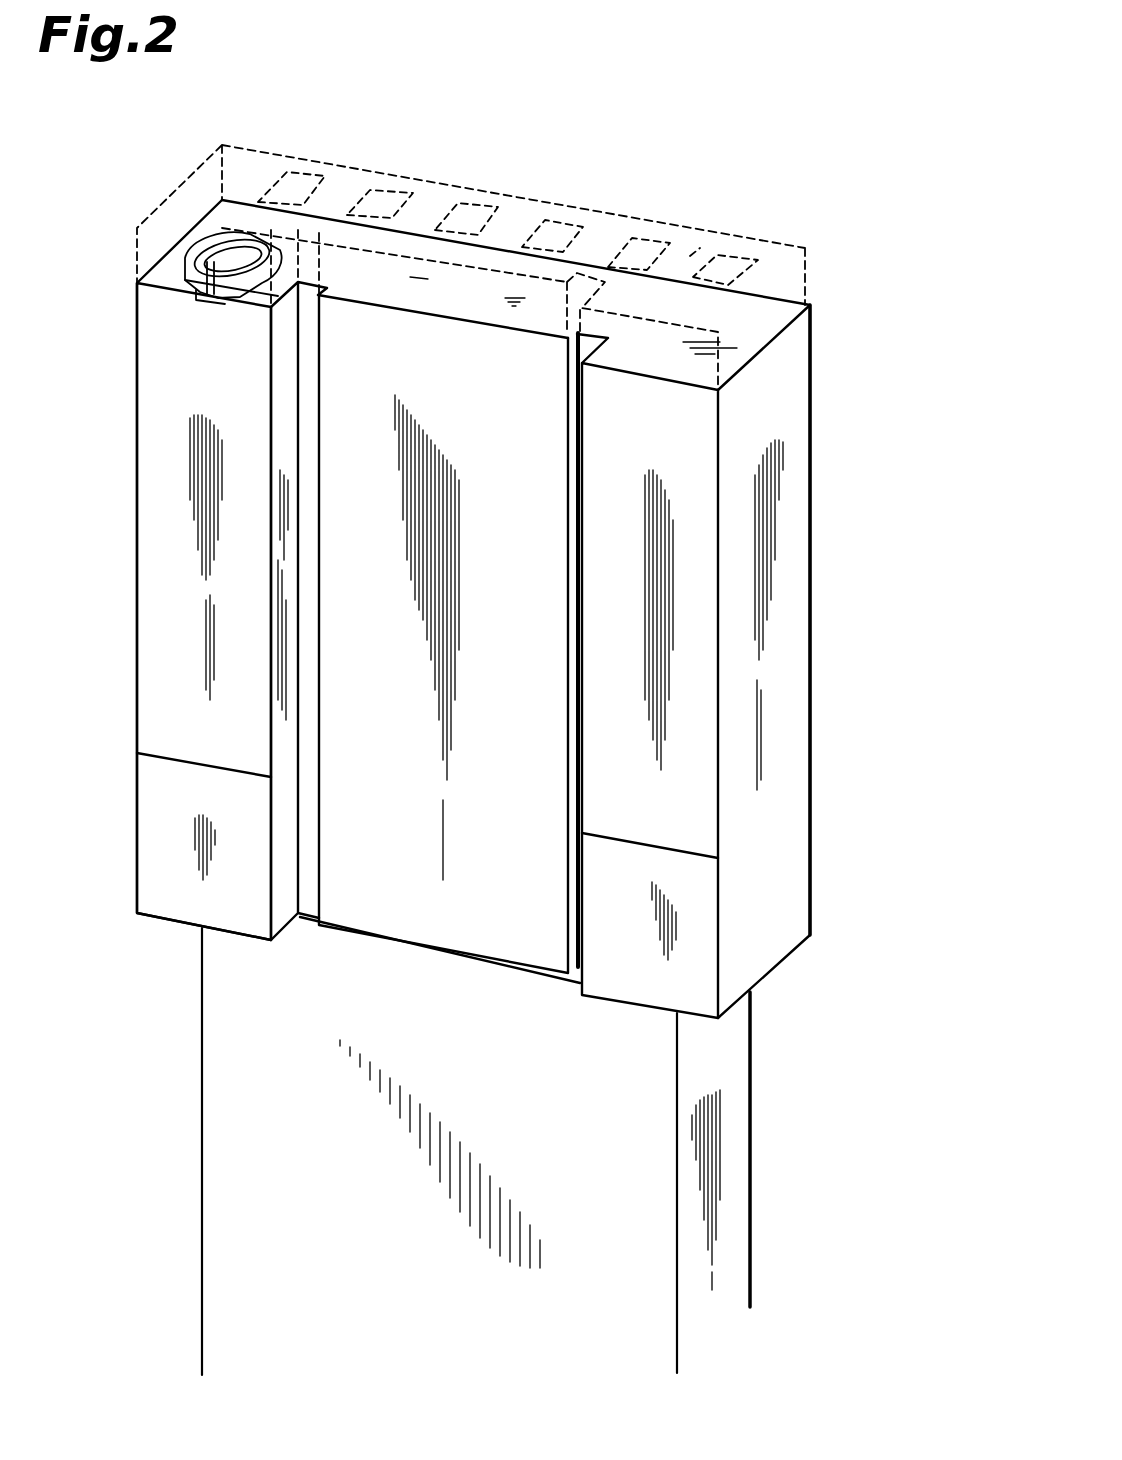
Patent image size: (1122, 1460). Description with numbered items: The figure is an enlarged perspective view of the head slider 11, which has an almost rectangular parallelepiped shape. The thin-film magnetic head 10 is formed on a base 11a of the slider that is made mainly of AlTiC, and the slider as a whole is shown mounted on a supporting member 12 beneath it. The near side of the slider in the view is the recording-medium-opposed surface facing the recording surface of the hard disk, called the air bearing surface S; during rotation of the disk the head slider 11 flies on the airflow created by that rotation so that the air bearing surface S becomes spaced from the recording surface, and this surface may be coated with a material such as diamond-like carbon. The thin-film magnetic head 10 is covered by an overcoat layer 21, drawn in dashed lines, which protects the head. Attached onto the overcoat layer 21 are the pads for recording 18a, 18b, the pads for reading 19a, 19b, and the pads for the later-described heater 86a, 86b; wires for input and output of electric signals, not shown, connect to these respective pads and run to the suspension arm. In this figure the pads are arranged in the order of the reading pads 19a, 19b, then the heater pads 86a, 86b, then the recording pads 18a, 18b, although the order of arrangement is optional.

The thin-film magnetic head 10 is at (192, 200).
The head slider 11 is at (842, 463).
The base 11a is at (785, 657).
The pillar 12 is at (728, 1067).
The pad for recording 18a is at (648, 240).
The pad for recording 18b is at (735, 258).
The pad for reading 19a is at (305, 178).
The pad for reading 19b is at (393, 192).
The pad for heater 86a is at (475, 208).
The pad for heater 86b is at (562, 223).
The overcoat layer 21 is at (690, 256).
The air bearing surface S is at (163, 510).